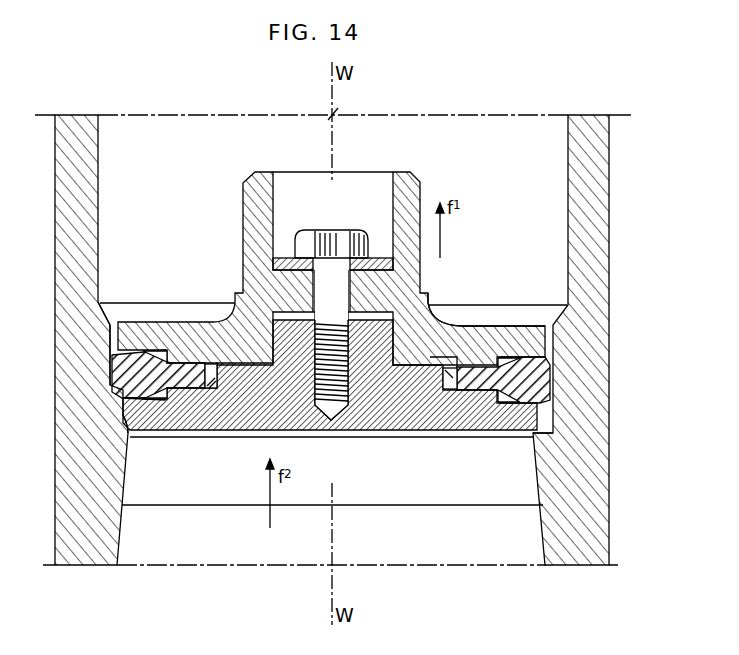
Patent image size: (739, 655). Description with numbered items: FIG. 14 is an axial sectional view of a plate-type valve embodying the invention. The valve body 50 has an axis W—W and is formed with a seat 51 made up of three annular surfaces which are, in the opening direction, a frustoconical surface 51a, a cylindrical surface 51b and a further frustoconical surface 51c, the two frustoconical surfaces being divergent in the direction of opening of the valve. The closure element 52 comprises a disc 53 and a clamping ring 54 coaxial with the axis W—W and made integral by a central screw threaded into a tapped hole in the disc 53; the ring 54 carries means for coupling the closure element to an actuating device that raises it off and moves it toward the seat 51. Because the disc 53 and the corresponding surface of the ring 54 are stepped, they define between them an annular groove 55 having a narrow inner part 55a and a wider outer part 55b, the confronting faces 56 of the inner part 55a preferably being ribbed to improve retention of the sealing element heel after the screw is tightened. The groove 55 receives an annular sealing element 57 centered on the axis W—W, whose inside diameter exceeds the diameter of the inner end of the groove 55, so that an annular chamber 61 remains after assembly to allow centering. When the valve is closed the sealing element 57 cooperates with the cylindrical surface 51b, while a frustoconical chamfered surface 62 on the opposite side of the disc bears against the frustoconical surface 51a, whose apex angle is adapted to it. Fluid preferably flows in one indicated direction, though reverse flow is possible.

The valve body 50 is at (584, 548).
The seat 51 is at (111, 322).
The frustoconical surface 51a is at (133, 419).
The cylindrical surface 51b is at (112, 387).
The frustoconical surface 51c is at (103, 303).
The closure element 52 is at (463, 324).
The disc 53 is at (413, 417).
The clamping ring 54 is at (431, 313).
The annular groove 55 is at (505, 357).
The narrow inner part 55a is at (433, 351).
The wider outer part 55b is at (503, 418).
The confronting faces 56 is at (219, 366).
The annular sealing element 57 is at (143, 399).
The annular chamber 61 is at (351, 397).
The frustoconical chamfered surface 62 is at (538, 447).